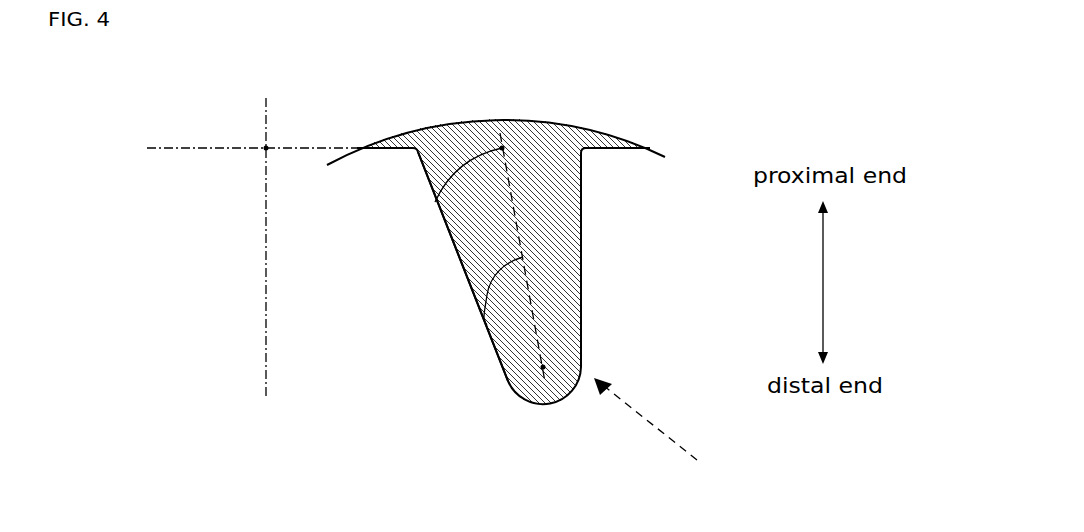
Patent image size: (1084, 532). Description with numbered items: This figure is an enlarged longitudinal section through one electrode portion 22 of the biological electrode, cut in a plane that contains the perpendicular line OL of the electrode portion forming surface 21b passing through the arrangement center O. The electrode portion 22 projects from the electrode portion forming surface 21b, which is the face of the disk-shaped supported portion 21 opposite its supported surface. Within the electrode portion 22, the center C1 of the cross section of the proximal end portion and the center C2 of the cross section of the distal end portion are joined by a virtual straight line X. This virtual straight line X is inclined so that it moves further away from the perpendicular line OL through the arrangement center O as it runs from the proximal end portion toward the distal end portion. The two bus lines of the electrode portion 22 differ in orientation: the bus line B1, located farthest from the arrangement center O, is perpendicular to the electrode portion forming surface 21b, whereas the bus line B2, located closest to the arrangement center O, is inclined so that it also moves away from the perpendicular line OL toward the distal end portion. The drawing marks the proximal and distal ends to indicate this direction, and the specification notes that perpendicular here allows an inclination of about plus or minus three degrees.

The supported portion 21 is at (590, 128).
The electrode portion forming surface 21b is at (610, 150).
The electrode portion 22 is at (530, 403).
The bus line B1 is at (582, 253).
The bus line B2 is at (452, 253).
The center of the cross section of the proximal end portion C1 is at (437, 192).
The center of the cross section of the distal end portion C2 is at (543, 367).
The virtual straight line X is at (487, 322).
The arrangement center O is at (266, 148).
The perpendicular line OL is at (265, 310).